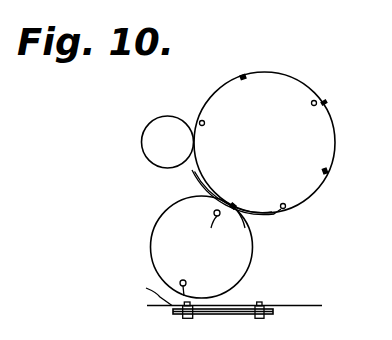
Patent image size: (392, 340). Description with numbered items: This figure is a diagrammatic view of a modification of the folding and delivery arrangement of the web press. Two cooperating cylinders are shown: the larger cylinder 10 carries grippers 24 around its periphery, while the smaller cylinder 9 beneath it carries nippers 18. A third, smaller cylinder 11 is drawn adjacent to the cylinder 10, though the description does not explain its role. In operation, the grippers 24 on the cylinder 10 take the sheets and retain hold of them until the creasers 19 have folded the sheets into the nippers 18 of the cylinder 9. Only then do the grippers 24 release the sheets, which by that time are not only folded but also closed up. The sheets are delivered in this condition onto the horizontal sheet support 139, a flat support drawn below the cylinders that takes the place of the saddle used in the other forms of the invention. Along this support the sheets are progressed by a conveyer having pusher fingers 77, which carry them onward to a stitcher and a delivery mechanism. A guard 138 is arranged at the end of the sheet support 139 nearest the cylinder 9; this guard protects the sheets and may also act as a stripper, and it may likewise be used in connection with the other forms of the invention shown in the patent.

The cylinder 9 is at (202, 247).
The cylinder 10 is at (263, 143).
The roller 11 is at (168, 142).
The nippers 18 is at (187, 286).
The creasers 19 is at (244, 76).
The grippers 24 is at (203, 120).
The pusher fingers 77 is at (259, 303).
The guard 138 is at (140, 292).
The horizontal sheet support 139 is at (322, 306).